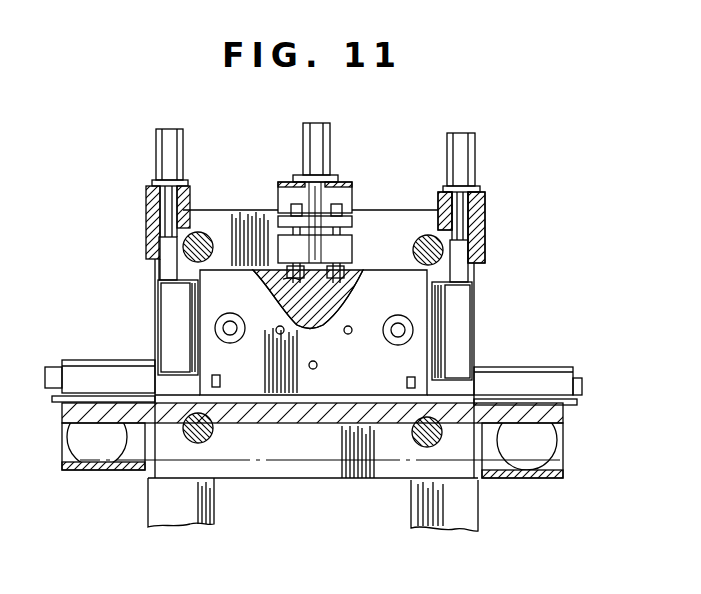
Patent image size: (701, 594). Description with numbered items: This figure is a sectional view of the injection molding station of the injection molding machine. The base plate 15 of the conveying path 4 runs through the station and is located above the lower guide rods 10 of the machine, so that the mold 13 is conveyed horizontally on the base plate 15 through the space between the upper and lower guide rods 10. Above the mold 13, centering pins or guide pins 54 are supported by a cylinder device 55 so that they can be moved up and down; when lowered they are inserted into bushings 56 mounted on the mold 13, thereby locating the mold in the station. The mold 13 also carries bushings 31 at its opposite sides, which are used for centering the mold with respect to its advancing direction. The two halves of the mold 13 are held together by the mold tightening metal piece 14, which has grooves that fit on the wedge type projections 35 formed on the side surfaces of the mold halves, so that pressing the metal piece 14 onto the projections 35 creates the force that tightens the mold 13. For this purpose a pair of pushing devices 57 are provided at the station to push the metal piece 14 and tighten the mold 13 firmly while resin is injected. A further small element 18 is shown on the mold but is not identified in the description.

The conveying path 4 is at (100, 474).
The guide rods 10 is at (430, 235).
The mold 13 is at (387, 270).
The mold tightening metal piece 14 is at (173, 322).
The base plate 15 is at (309, 420).
The stop 18 is at (407, 383).
The bushings 31 is at (233, 340).
The wedge type projections 35 is at (200, 276).
The centering pins 54 is at (287, 265).
The cylinder device 55 is at (320, 140).
The bushings 56 is at (290, 281).
The pushing devices 57 is at (462, 254).